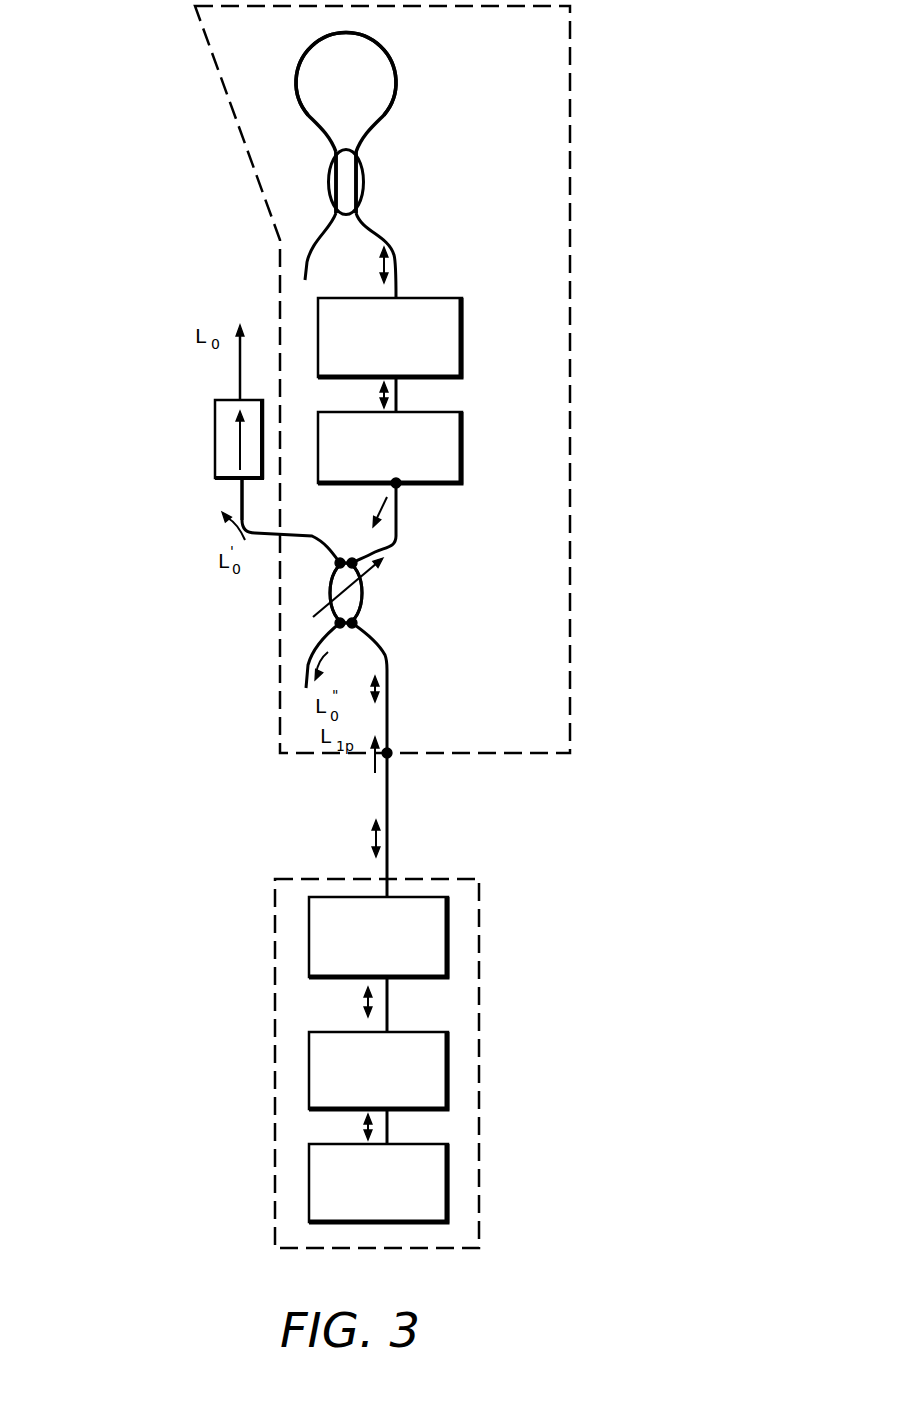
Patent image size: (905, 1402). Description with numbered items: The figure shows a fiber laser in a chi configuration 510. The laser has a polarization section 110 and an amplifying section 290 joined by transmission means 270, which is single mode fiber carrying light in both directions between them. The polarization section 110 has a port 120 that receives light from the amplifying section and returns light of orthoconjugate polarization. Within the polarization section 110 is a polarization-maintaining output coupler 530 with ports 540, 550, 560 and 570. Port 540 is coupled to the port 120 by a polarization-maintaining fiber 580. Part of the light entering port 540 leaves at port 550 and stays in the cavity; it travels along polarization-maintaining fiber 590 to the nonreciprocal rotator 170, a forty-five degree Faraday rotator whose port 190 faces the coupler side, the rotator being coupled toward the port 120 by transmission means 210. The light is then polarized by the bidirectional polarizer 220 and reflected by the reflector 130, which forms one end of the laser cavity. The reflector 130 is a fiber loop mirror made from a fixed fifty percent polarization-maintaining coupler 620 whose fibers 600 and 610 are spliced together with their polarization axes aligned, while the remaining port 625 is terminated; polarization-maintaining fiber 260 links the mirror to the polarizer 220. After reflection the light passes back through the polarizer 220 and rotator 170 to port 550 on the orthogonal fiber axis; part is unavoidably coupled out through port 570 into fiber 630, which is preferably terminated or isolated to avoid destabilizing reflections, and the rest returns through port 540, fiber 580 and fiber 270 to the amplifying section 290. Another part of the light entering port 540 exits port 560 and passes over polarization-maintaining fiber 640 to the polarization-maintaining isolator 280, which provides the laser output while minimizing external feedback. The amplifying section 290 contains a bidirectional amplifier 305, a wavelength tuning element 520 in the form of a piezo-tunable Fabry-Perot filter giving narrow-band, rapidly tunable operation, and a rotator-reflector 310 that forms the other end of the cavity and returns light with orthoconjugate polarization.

The polarization section 110 is at (539, 290).
The port 120 is at (393, 757).
The reflector 130 is at (376, 152).
The nonreciprocal rotator 170 is at (451, 450).
The port 190 is at (400, 487).
The transmission means 210 is at (476, 502).
The bidirectional polarizer 220 is at (440, 307).
The polarization-maintaining fiber 260 is at (399, 246).
The transmission means 270 is at (393, 822).
The polarization-maintaining isolator 280 is at (215, 452).
The amplifying section 290 is at (460, 990).
The bidirectional amplifier 305 is at (322, 937).
The rotator-reflector 310 is at (322, 1176).
The chi laser 510 is at (147, 813).
The wavelength tuning element 520 is at (322, 1062).
The polarization-maintaining output coupler 530 is at (350, 602).
The port 540 is at (352, 623).
The port 550 is at (340, 560).
The port 560 is at (340, 563).
The port 570 is at (340, 623).
The polarization-maintaining fiber 580 is at (388, 702).
The polarization-maintaining fiber 590 is at (392, 540).
The polarization-maintaining fiber 600 is at (307, 52).
The polarization-maintaining fiber 610 is at (397, 78).
The polarization-maintaining coupler 620 is at (352, 181).
The port 625 is at (317, 238).
The fiber 630 is at (313, 660).
The polarization-maintaining fiber 640 is at (242, 498).